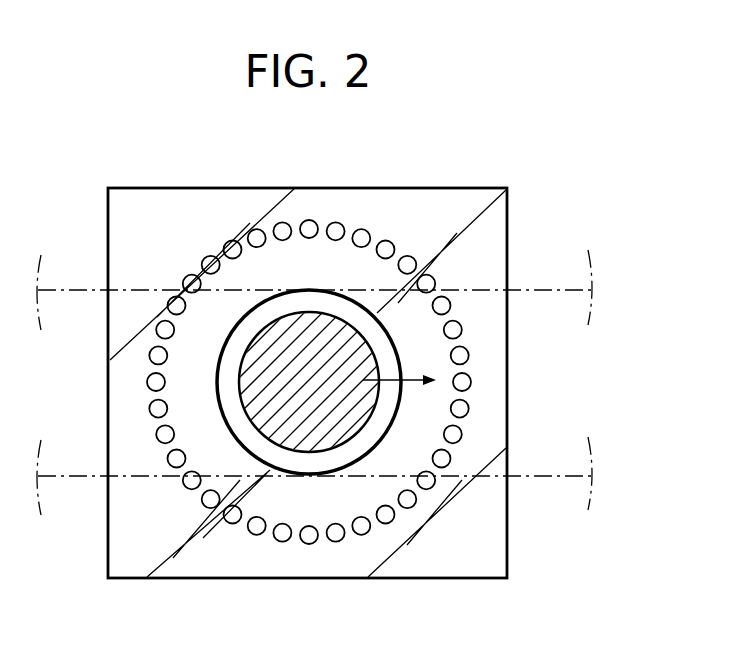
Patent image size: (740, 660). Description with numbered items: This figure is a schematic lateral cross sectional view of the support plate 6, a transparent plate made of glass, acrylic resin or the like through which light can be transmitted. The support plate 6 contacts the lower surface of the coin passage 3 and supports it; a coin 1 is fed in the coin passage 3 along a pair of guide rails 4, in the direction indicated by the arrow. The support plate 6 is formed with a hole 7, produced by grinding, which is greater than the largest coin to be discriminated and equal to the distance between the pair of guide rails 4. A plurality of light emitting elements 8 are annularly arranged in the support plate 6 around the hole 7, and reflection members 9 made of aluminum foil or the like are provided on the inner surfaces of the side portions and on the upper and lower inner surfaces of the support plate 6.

The coin 1 is at (270, 378).
The coin passage 3 is at (366, 375).
The guide rails 4 is at (532, 290).
The support plate 6 is at (474, 208).
The hole 7 is at (230, 411).
The light emitting elements 8 is at (280, 223).
The reflection members 9 is at (332, 189).